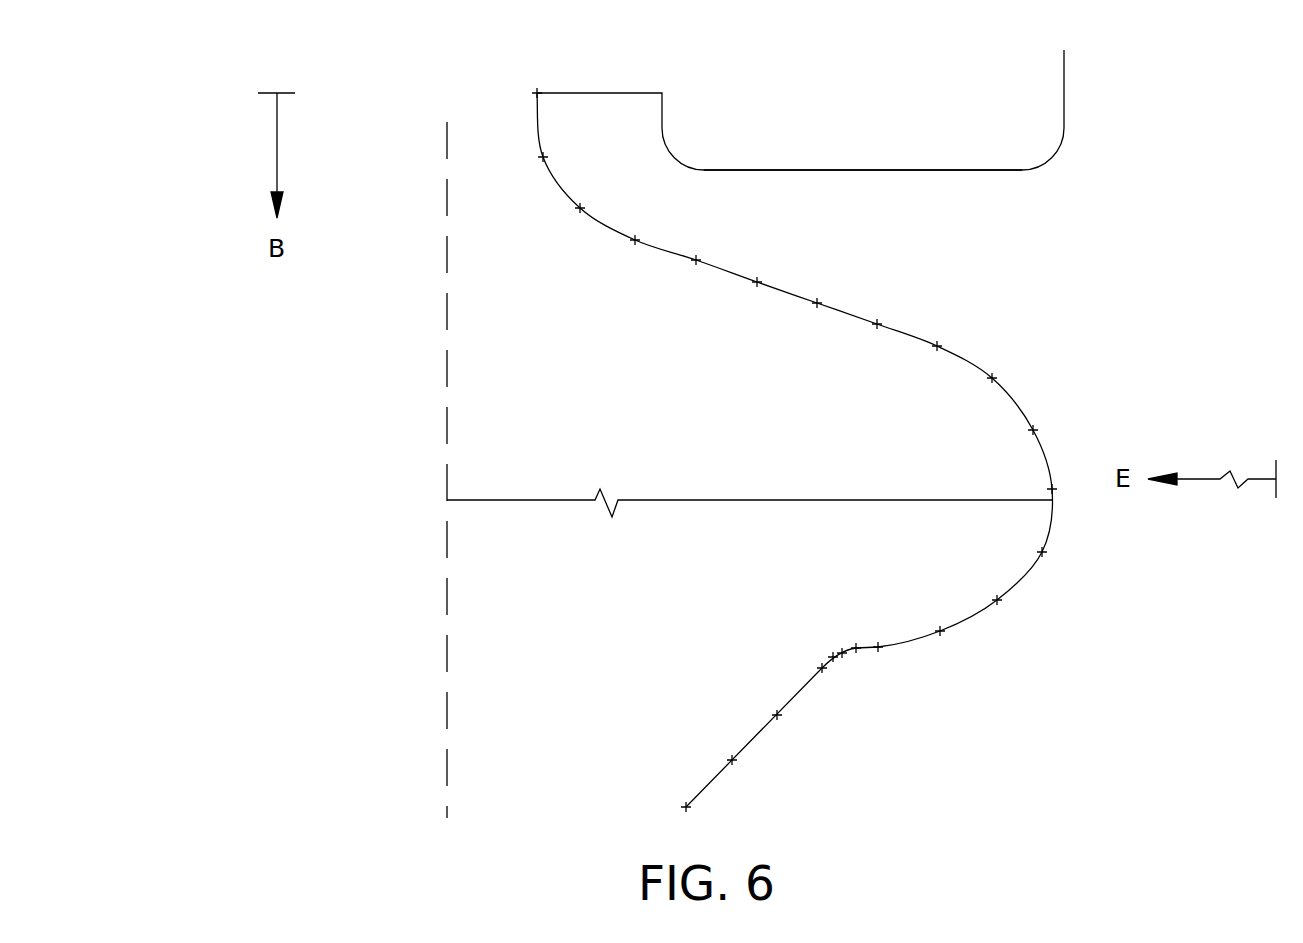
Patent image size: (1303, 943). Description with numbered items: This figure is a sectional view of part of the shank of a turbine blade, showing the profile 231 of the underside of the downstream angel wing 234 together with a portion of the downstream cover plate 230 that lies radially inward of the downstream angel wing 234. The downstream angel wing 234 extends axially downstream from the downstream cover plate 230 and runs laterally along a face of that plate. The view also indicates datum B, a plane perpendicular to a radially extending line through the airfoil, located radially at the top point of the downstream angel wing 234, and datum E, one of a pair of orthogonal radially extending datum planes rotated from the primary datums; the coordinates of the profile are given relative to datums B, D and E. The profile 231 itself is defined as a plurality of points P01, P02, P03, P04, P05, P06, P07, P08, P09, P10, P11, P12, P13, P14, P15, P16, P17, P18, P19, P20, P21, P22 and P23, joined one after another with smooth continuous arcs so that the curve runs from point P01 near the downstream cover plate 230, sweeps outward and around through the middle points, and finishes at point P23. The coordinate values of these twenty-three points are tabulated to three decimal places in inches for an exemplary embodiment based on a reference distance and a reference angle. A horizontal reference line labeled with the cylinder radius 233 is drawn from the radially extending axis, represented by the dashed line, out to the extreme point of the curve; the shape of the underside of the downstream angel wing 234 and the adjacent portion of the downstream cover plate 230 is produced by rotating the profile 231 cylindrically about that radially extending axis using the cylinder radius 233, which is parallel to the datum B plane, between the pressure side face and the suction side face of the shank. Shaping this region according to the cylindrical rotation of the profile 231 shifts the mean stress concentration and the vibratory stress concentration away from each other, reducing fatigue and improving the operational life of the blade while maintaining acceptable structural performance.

The downstream cover plate 230 is at (1064, 90).
The profile 231 is at (614, 568).
The cylinder radius 233 is at (473, 500).
The downstream angel wing 234 is at (877, 168).
The point P01 is at (537, 93).
The point P02 is at (543, 157).
The point P03 is at (580, 208).
The point P04 is at (635, 240).
The point P05 is at (696, 260).
The point P06 is at (757, 282).
The point P07 is at (817, 303).
The point P08 is at (877, 324).
The point P09 is at (937, 346).
The point P10 is at (992, 378).
The point P11 is at (1033, 430).
The point P12 is at (1052, 489).
The point P13 is at (1042, 552).
The point P14 is at (997, 600).
The point P15 is at (940, 631).
The point P16 is at (878, 647).
The point P17 is at (856, 648).
The point P18 is at (842, 653).
The point P19 is at (833, 657).
The point P20 is at (822, 668).
The point P21 is at (777, 715).
The point P22 is at (732, 760).
The point P23 is at (686, 807).